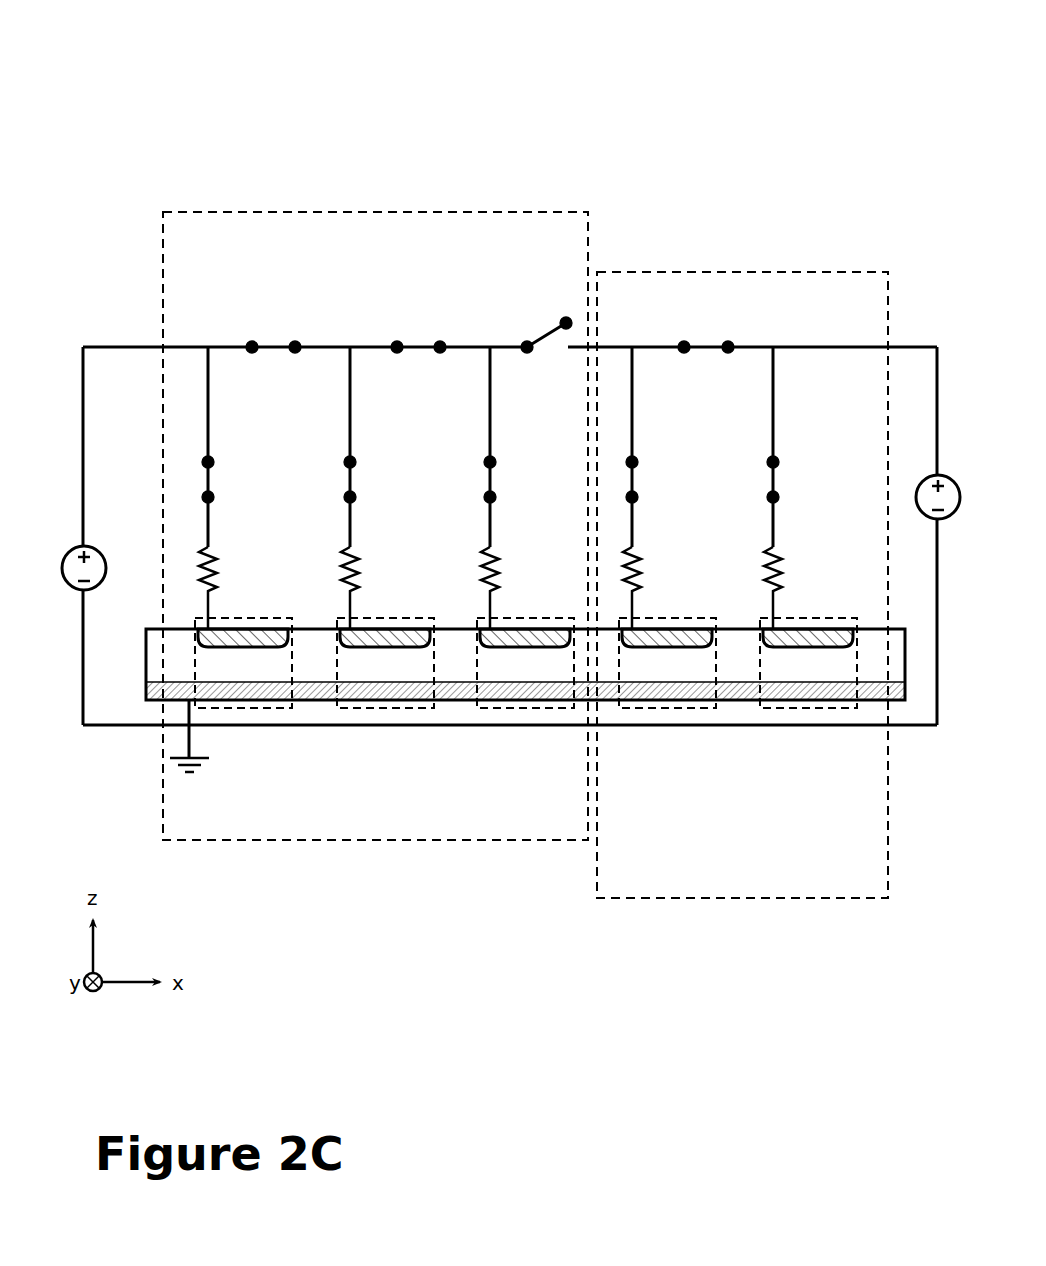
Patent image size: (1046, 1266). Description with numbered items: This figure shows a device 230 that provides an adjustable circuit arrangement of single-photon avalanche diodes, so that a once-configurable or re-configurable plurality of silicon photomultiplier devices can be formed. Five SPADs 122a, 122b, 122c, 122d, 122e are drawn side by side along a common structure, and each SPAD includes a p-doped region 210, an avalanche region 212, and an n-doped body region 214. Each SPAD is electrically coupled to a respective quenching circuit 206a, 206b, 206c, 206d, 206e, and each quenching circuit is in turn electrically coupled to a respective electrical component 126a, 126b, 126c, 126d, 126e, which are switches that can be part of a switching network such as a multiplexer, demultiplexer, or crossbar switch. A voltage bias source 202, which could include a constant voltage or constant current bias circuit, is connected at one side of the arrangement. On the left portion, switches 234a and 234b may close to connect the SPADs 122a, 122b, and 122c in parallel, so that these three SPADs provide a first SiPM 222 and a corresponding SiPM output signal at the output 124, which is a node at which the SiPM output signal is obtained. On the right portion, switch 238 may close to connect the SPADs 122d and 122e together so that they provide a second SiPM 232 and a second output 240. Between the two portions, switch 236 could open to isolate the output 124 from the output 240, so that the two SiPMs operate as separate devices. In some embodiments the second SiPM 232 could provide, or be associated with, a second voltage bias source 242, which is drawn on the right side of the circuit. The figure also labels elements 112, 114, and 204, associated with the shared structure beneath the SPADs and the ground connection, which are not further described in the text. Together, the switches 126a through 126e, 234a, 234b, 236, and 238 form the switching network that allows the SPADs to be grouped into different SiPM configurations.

The device 230 is at (836, 80).
The first SiPM 222 is at (538, 230).
The second SiPM 232 is at (757, 292).
The output 124 is at (305, 323).
The switch 234a is at (291, 326).
The switch 234b is at (436, 326).
The switch 236 is at (529, 312).
The switch 238 is at (726, 331).
The second output 240 is at (752, 328).
The second voltage bias source 242 is at (885, 470).
The voltage bias source 202 is at (98, 558).
The electrical component 126a is at (238, 447).
The electrical component 126b is at (380, 447).
The electrical component 126c is at (520, 447).
The electrical component 126d is at (662, 447).
The electrical component 126e is at (803, 447).
The quenching circuit 206a is at (237, 587).
The quenching circuit 206b is at (379, 587).
The quenching circuit 206c is at (519, 587).
The quenching circuit 206d is at (661, 587).
The quenching circuit 206e is at (802, 587).
The SPAD 122a is at (248, 645).
The SPAD 122b is at (390, 645).
The SPAD 122c is at (530, 645).
The SPAD 122d is at (672, 645).
The SPAD 122e is at (813, 645).
The substrate support 112 is at (541, 646).
The base layer 114 is at (548, 697).
The ground 204 is at (229, 742).
The p-doped region 210 is at (290, 700).
The avalanche region 212 is at (525, 703).
The n-doped body region 214 is at (525, 721).